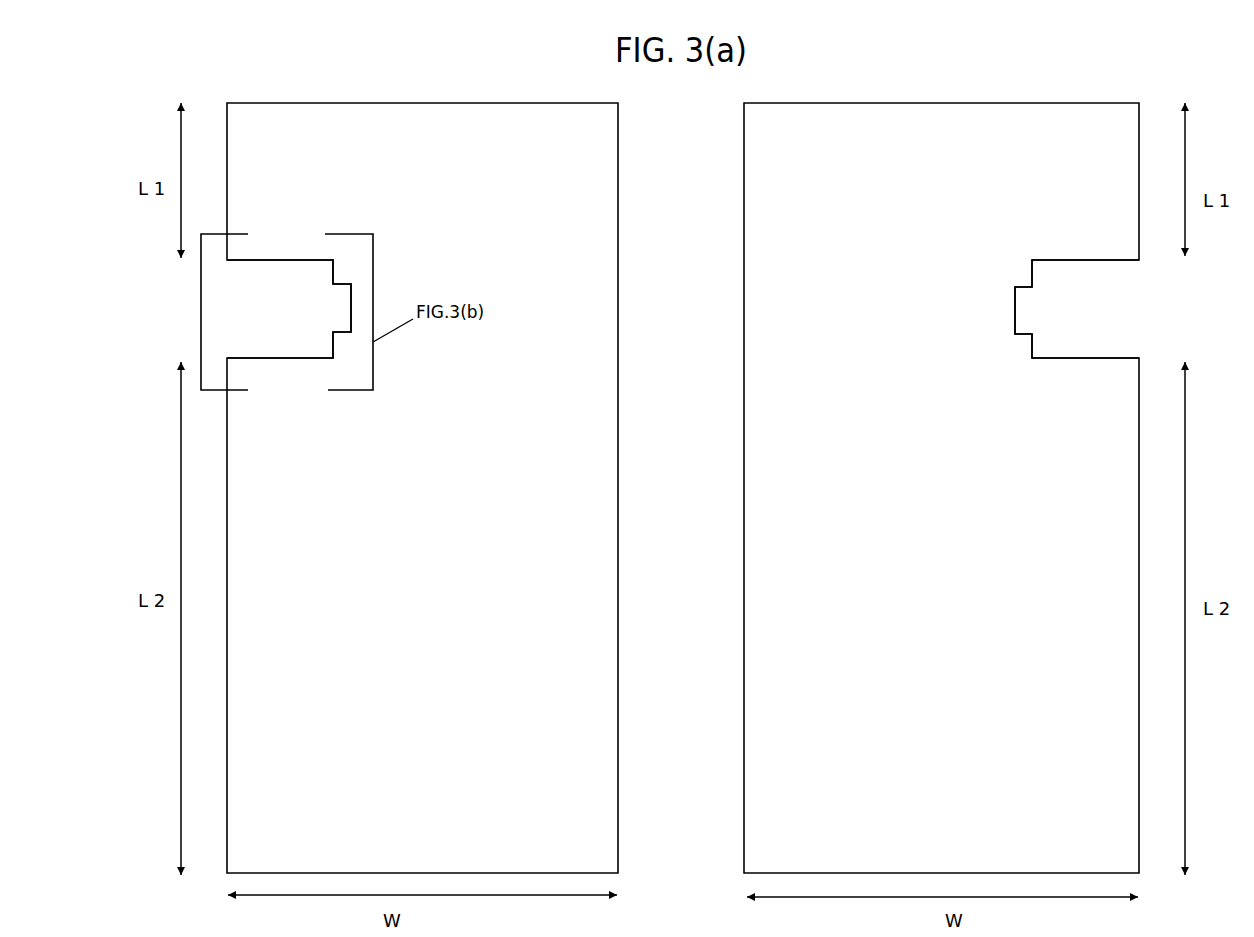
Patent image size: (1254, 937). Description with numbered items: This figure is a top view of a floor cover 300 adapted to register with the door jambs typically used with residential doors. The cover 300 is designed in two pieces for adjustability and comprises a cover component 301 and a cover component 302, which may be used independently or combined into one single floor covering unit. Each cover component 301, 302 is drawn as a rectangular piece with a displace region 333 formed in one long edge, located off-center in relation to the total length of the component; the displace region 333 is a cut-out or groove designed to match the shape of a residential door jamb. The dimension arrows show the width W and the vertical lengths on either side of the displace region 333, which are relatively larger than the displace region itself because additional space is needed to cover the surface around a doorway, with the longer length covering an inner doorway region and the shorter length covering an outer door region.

The cover 300 is at (683, 488).
The cover component 301 is at (612, 117).
The cover component 302 is at (757, 865).
The displace region 333 is at (308, 327).